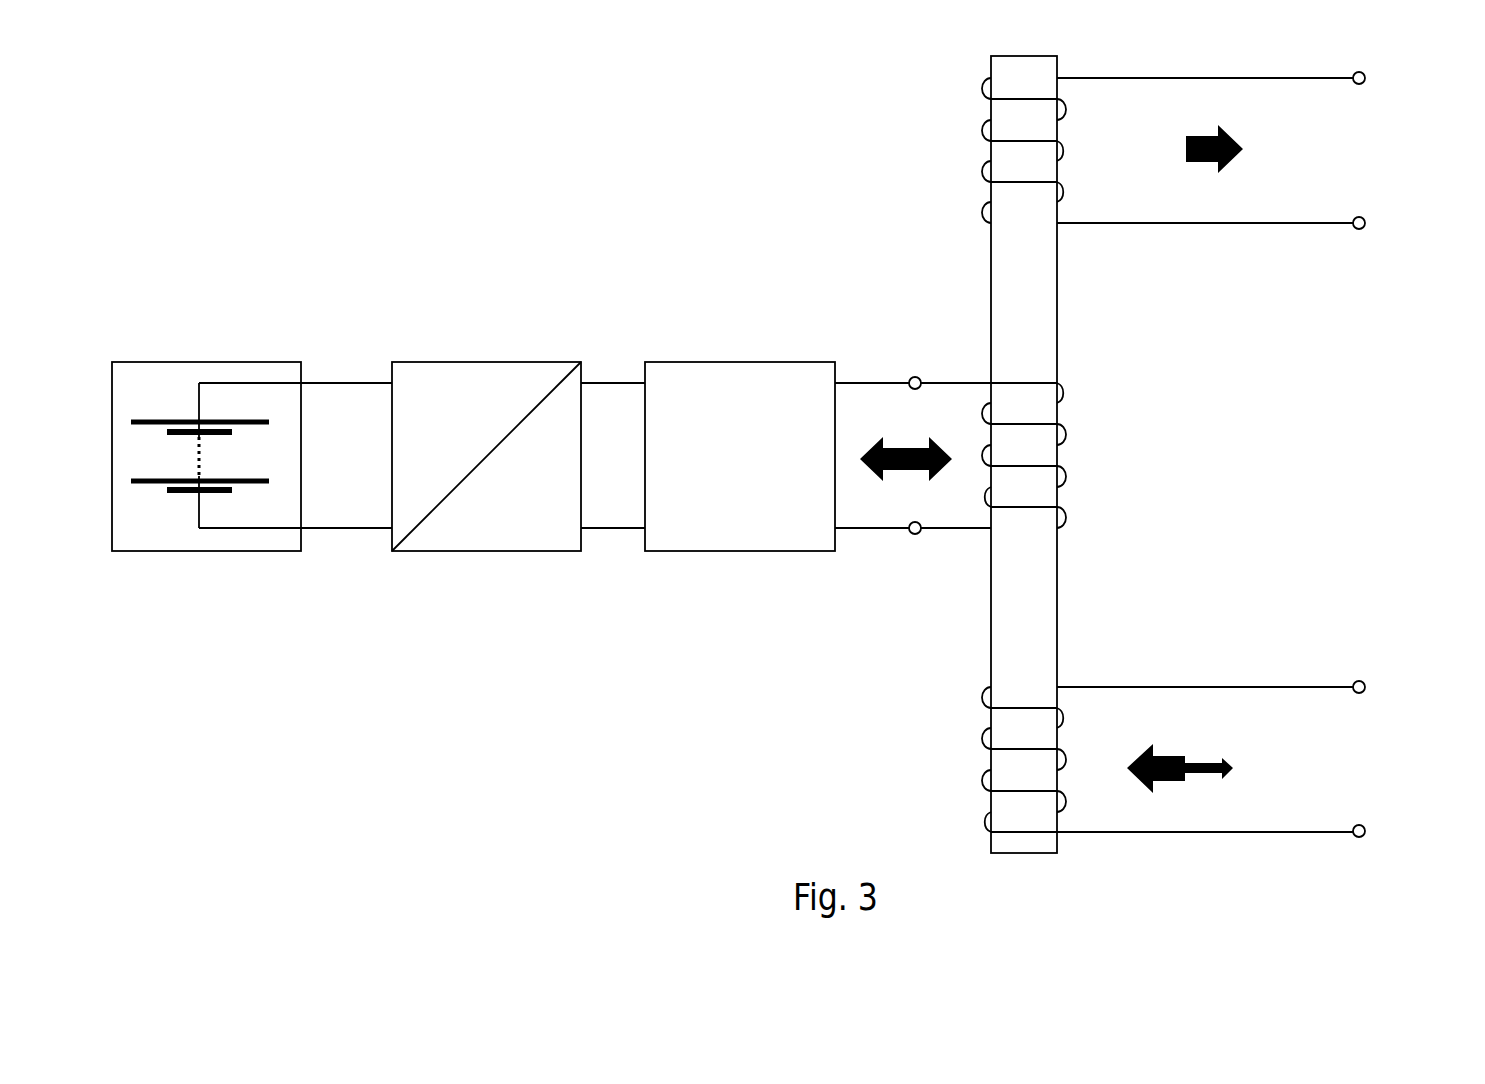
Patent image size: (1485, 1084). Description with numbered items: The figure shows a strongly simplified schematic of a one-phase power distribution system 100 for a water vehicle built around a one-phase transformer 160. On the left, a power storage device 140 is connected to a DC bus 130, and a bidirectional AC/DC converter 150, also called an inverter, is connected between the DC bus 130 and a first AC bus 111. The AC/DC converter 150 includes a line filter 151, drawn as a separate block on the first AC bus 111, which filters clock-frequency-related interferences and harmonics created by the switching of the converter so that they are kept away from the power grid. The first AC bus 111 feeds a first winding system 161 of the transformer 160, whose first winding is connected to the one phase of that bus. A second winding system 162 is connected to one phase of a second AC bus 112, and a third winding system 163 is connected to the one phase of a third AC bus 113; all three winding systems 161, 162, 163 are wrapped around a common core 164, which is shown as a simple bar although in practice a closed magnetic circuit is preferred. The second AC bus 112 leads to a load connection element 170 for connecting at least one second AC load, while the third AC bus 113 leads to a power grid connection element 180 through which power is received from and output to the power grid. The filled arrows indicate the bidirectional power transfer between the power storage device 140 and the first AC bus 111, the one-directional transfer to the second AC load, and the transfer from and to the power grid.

The power distribution system 100 is at (612, 232).
The first AC bus 111 is at (886, 383).
The second AC bus 112 is at (1240, 226).
The third AC bus 113 is at (1206, 686).
The DC bus 130 is at (363, 378).
The power storage device 140 is at (219, 551).
The bidirectional AC/DC converter 150 is at (466, 362).
The line filter 151 is at (716, 362).
The transformer 160 is at (1080, 320).
The first winding system 161 is at (1067, 519).
The second winding system 162 is at (987, 180).
The third winding system 163 is at (987, 746).
The common core 164 is at (990, 625).
The load connection element 170 is at (1366, 62).
The power grid connection element 180 is at (1367, 670).